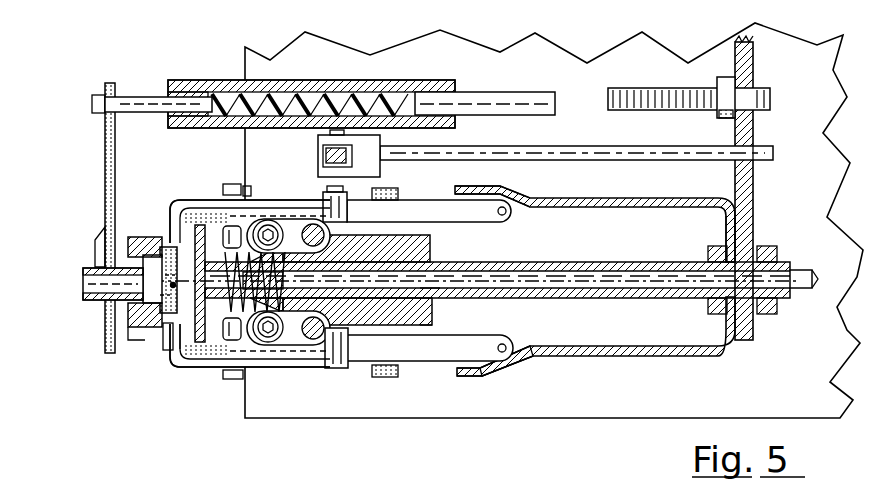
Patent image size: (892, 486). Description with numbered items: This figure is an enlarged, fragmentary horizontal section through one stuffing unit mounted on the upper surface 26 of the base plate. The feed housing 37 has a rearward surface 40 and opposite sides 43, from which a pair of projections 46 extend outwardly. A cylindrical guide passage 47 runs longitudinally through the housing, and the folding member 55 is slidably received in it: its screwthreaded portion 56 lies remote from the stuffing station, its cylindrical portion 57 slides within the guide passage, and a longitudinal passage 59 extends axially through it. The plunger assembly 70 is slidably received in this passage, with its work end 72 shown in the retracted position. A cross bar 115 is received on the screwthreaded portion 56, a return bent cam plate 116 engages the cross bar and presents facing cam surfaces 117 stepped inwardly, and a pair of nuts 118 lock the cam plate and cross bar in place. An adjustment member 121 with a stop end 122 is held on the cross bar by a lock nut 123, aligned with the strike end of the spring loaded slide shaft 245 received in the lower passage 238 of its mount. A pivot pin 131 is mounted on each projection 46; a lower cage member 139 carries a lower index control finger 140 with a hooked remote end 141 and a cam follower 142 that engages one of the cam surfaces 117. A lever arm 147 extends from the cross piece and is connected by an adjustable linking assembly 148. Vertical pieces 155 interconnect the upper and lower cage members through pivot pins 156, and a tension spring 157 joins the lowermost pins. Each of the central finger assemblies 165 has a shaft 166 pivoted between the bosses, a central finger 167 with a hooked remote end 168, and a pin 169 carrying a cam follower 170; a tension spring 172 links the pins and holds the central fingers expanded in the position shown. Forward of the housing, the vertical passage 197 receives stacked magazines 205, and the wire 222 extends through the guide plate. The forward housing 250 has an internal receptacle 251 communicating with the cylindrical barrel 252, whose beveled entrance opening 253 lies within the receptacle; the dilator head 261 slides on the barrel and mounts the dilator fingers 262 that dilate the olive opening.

The upper surface 26 is at (794, 383).
The feed housing 37 is at (440, 328).
The rearward surface 40 is at (430, 248).
The opposite sides 43 is at (408, 200).
The projections 46 is at (345, 222).
The guide passage 47 is at (430, 292).
The folding member 55 is at (530, 205).
The screwthreaded portion 56 is at (780, 262).
The cylindrical portion 57 is at (636, 350).
The longitudinal passage 59 is at (590, 262).
The plunger assembly 70 is at (790, 288).
The work end 72 is at (262, 272).
The cross bar 115 is at (754, 181).
The cam plate 116 is at (670, 199).
The cam surfaces 117 is at (480, 370).
The nuts 118 is at (715, 246).
The adjustment member 121 is at (642, 92).
The stop end 122 is at (608, 97).
The lock nut 123 is at (727, 118).
The pivot pin 131 is at (342, 195).
The lower cage member 139 is at (465, 190).
The lower index control finger 140 is at (195, 367).
The hooked remote end 141 is at (165, 342).
The cam follower 142 is at (503, 222).
The lever arm 147 is at (322, 152).
The adjustable linking assembly 148 is at (628, 148).
The vertical pieces 155 is at (398, 194).
The pivot pins 156 is at (232, 184).
The tension spring 157 is at (232, 226).
The central finger assemblies 165 is at (182, 196).
The shaft 166 is at (310, 224).
The central finger 167 is at (248, 370).
The hooked remote end 168 is at (182, 200).
The pins 169 is at (270, 343).
The cam follower 170 is at (262, 343).
The tension spring 172 is at (475, 281).
The vertical passage 197 is at (178, 250).
The magazines 205 is at (178, 242).
The wire 222 is at (173, 285).
The lower passage 238 is at (197, 100).
The slide shaft 245 is at (485, 102).
The forward housing 250 is at (130, 330).
The internal receptacle 251 is at (150, 304).
The cylindrical barrel 252 is at (128, 314).
The beveled entrance opening 253 is at (110, 333).
The dilator head 261 is at (105, 325).
The dilator fingers 262 is at (83, 284).